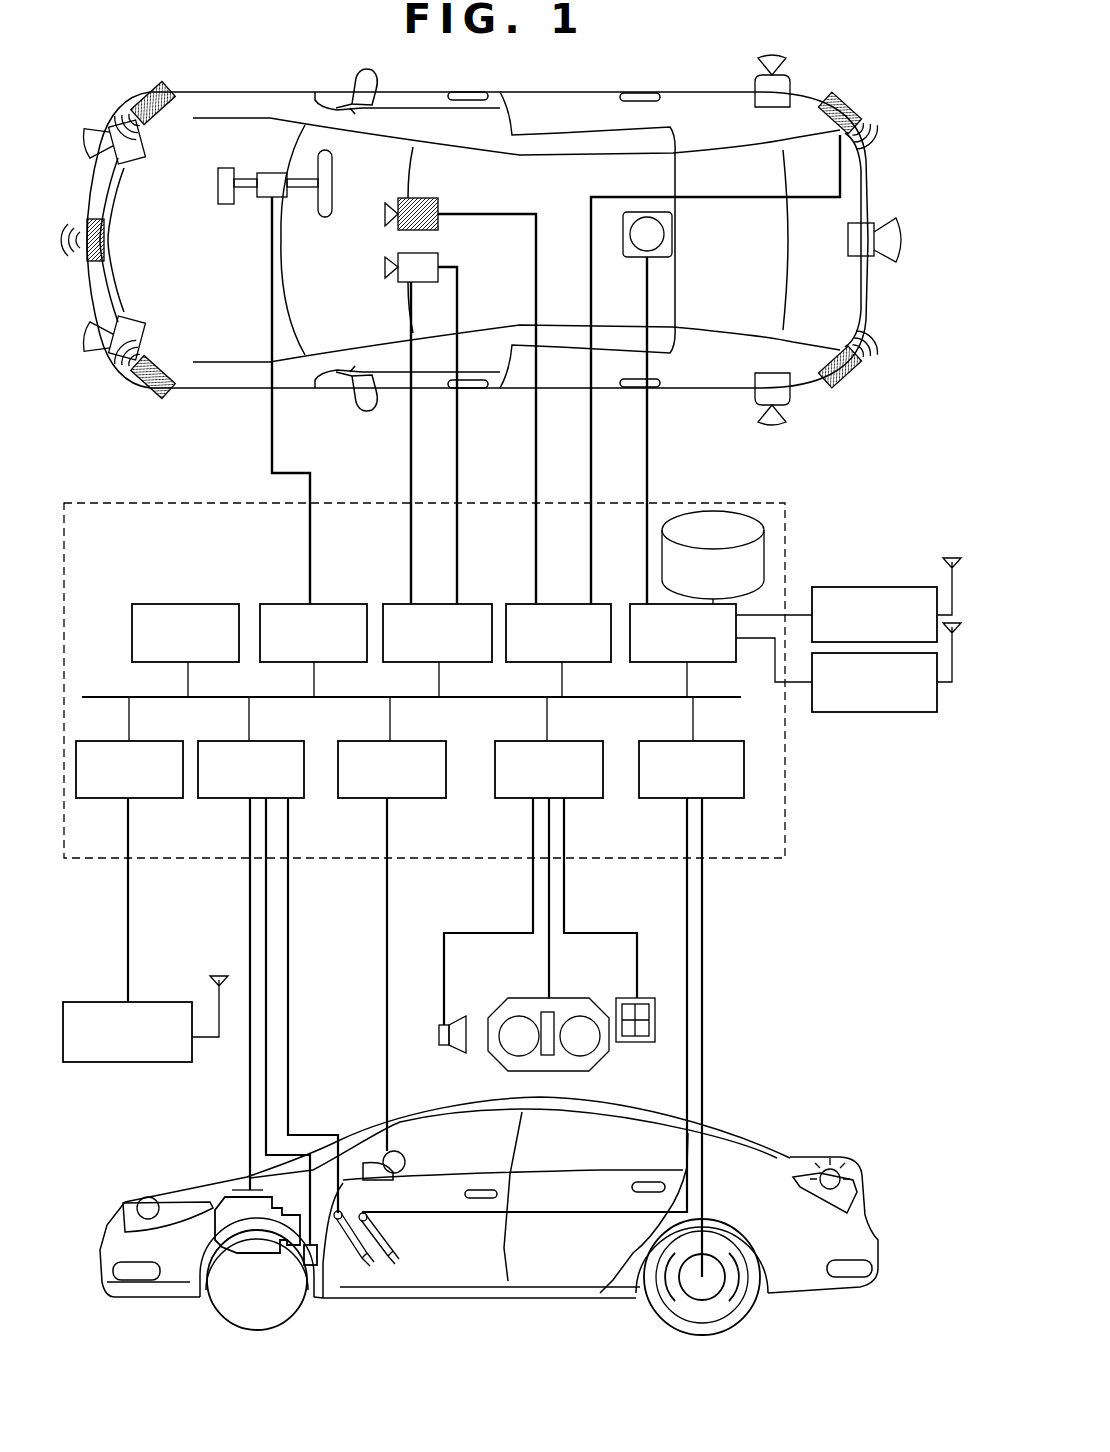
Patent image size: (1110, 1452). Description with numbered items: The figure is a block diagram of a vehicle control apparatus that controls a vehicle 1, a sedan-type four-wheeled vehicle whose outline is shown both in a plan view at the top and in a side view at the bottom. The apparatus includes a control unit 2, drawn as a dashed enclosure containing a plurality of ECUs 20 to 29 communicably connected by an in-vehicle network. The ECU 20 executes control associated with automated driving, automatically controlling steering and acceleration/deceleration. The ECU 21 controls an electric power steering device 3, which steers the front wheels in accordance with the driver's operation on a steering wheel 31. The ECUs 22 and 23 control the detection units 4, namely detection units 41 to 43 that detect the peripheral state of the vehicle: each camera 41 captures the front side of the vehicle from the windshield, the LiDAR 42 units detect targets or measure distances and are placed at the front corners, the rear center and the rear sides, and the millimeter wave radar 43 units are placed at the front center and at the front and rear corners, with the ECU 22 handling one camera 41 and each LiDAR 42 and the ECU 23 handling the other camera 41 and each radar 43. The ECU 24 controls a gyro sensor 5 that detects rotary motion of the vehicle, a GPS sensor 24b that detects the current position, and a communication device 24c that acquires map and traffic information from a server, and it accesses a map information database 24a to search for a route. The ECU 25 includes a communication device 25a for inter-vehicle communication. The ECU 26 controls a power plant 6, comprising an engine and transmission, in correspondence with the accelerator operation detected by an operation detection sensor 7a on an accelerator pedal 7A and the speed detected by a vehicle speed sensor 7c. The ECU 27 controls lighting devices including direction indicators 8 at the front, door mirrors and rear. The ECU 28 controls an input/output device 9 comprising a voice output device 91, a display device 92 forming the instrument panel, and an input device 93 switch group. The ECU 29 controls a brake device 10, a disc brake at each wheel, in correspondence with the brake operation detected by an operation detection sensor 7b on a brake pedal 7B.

The vehicle 1 is at (887, 142).
The control unit 2 is at (780, 860).
The electric power steering device 3 is at (226, 205).
The steering wheel 31 is at (326, 217).
The detection unit 4 is at (113, 97).
The camera 41 is at (440, 225).
The LiDAR 42 is at (136, 165).
The millimeter wave radar 43 is at (160, 116).
The gyro sensor 5 is at (672, 233).
The power plant 6 is at (222, 1197).
The operation detection sensor 7a is at (340, 1208).
The accelerator pedal 7A is at (372, 1262).
The operation detection sensor 7b is at (365, 1213).
The brake pedal 7B is at (396, 1258).
The vehicle speed sensor 7c is at (312, 1265).
The direction indicator 8 is at (138, 1202).
The input/output device 9 is at (535, 1045).
The voice output device 91 is at (439, 1030).
The display device 92 is at (500, 1010).
The input device 93 is at (640, 1042).
The brake device 10 is at (705, 1300).
The ECU 20 is at (213, 604).
The ECU 21 is at (340, 604).
The ECU 22 is at (432, 604).
The ECU 23 is at (565, 604).
The ECU 24 is at (632, 604).
The map information database 24a is at (712, 511).
The GPS sensor 24b is at (873, 587).
The communication device 24c is at (866, 712).
The ECU 25 is at (158, 798).
The communication device 25a is at (130, 1062).
The ECU 26 is at (222, 798).
The ECU 27 is at (420, 798).
The ECU 28 is at (587, 798).
The ECU 29 is at (725, 798).